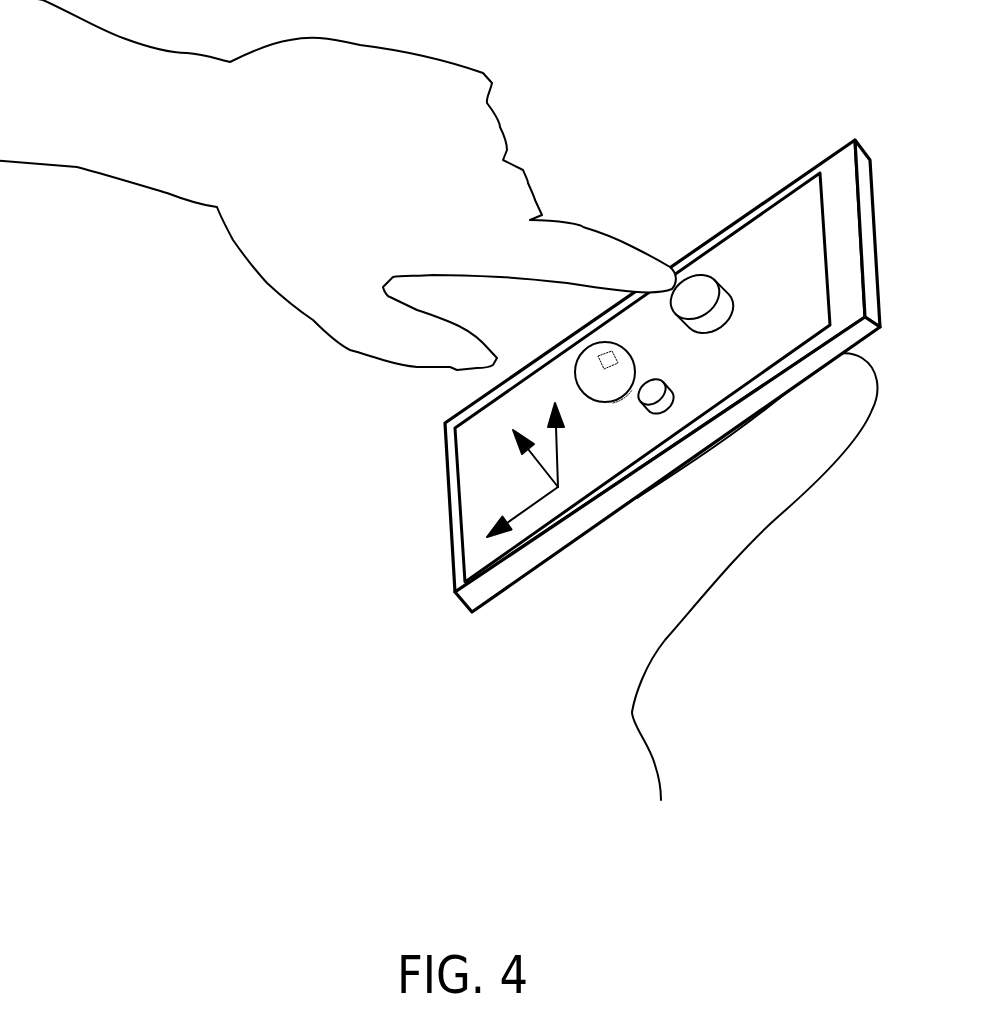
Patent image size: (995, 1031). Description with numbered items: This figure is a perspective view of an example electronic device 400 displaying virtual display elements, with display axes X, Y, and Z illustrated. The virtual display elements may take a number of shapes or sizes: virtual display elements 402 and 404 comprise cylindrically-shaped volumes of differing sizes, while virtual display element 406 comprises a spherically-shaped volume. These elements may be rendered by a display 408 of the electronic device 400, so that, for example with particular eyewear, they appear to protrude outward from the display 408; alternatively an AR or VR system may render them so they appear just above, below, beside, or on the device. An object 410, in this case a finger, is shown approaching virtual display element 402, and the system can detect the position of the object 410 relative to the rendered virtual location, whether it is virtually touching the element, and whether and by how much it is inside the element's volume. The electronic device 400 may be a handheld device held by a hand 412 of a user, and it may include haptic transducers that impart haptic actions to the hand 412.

The electronic device 400 is at (662, 356).
The virtual display element 402 is at (720, 290).
The virtual display element 404 is at (665, 387).
The virtual display element 406 is at (597, 338).
The display 408 is at (778, 190).
The object 410 is at (582, 225).
The hand 412 is at (708, 534).